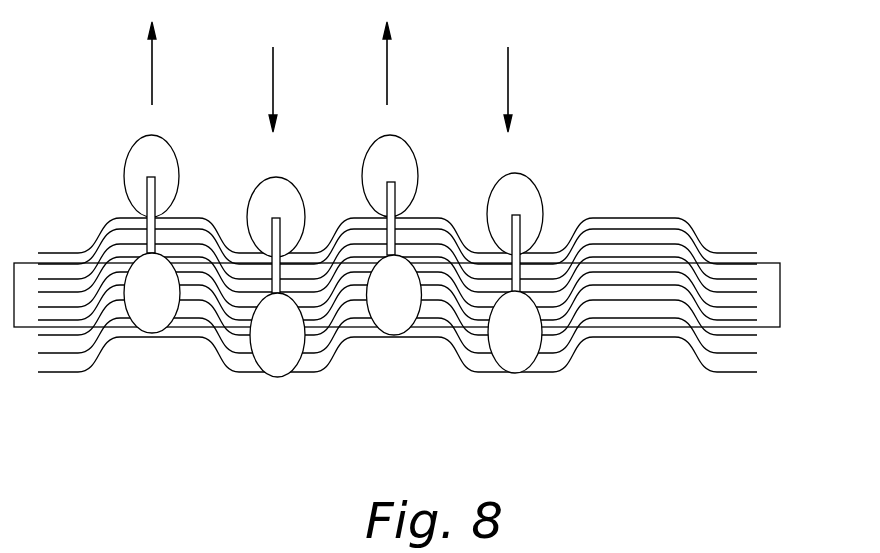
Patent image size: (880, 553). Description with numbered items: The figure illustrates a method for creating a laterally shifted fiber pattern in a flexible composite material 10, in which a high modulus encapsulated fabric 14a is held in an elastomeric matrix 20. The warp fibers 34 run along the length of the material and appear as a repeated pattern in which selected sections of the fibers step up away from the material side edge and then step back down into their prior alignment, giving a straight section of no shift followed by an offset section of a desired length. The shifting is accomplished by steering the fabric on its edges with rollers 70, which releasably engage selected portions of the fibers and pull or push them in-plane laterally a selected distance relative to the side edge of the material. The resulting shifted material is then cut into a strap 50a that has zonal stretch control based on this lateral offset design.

The flexible composite material 10 is at (401, 281).
The encapsulated fabric 14a is at (652, 342).
The elastomeric matrix 20 is at (230, 118).
The warp fibers 34 is at (334, 352).
The strap 50a is at (738, 280).
The rollers 70 is at (303, 288).